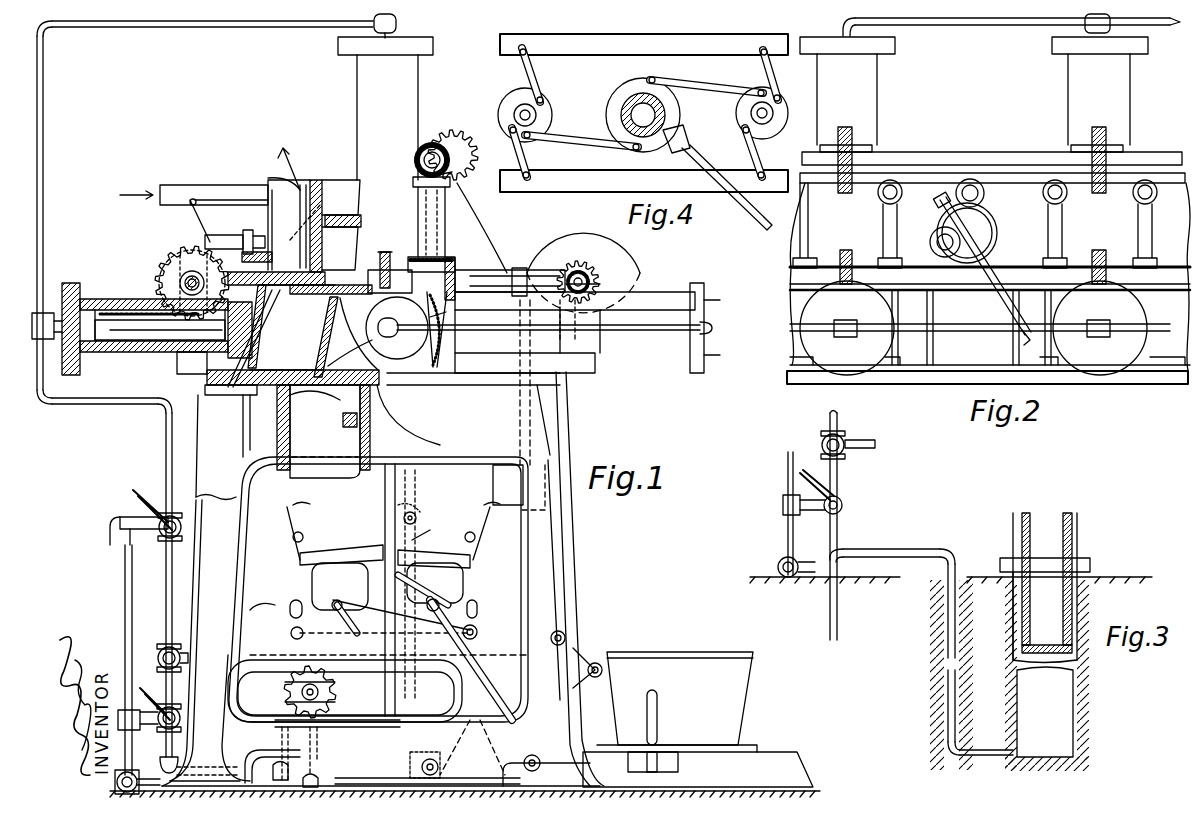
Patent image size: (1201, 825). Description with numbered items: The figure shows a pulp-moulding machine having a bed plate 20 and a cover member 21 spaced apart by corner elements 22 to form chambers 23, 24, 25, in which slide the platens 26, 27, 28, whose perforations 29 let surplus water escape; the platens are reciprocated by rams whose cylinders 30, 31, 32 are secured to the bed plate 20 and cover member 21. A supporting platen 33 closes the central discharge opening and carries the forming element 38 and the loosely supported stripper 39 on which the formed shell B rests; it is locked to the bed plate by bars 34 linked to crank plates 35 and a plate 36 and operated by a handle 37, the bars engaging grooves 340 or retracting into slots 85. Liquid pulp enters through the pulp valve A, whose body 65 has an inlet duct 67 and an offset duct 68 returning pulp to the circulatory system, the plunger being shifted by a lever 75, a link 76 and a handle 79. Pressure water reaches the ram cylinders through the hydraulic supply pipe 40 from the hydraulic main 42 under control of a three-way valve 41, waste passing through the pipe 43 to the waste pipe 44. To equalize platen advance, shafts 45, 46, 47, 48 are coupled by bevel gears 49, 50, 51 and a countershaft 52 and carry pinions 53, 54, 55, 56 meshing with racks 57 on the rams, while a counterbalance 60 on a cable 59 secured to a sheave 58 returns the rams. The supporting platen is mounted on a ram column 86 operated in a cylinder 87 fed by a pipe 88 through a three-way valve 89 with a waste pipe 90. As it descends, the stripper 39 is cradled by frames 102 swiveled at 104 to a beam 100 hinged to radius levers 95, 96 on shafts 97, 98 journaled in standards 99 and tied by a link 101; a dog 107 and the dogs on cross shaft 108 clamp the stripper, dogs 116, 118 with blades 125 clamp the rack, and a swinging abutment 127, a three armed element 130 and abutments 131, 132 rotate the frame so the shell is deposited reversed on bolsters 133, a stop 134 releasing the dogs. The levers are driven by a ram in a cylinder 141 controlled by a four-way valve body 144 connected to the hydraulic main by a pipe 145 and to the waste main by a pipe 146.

In FIG. 1, the bed plate 20 is at (232, 388).
In FIG. 2, the bed plate 20 is at (907, 383).
In FIG. 1, the cover member 21 is at (452, 232).
In FIG. 2, the cover member 21 is at (1037, 243).
In FIG. 1, the corner elements 22 is at (493, 353).
In FIG. 1, the chamber 23 is at (291, 327).
In FIG. 1, the chamber 24 is at (453, 347).
In FIG. 1, the chamber 25 is at (340, 251).
In FIG. 1, the platen 26 is at (258, 305).
In FIG. 2, the platen 26 is at (970, 350).
In FIG. 1, the platen 27 is at (446, 312).
In FIG. 1, the platen 28 is at (341, 217).
In FIG. 1, the perforations 29 is at (350, 225).
In FIG. 1, the ram cylinder 30 is at (140, 290).
In FIG. 2, the ram cylinder 30 is at (800, 348).
In FIG. 1, the ram cylinder 31 is at (458, 268).
In FIG. 1, the ram cylinder 32 is at (370, 102).
In FIG. 2, the ram cylinder 32 is at (872, 107).
In FIG. 1, the supporting platen 33 is at (323, 431).
In FIG. 4, the bars 34 is at (590, 50).
In FIG. 4, the crank plates 35 is at (550, 113).
In FIG. 4, the plate 36 is at (648, 82).
In FIG. 4, the handle 37 is at (755, 228).
In FIG. 1, the forming element 38 is at (318, 348).
In FIG. 1, the stripper 39 is at (330, 358).
In FIG. 1, the hydraulic supply pipe 40 is at (127, 27).
In FIG. 2, the hydraulic supply pipe 40 is at (947, 327).
In FIG. 3, the hydraulic supply pipe 40 is at (838, 426).
In FIG. 1, the valve 41 is at (150, 522).
In FIG. 1, the hydraulic main 42 is at (160, 648).
In FIG. 3, the hydraulic main 42 is at (849, 439).
In FIG. 1, the pipe 43 is at (124, 592).
In FIG. 1, the waste pipe 44 is at (115, 782).
In FIG. 1, the shaft 45 is at (158, 272).
In FIG. 1, the shaft 46 is at (535, 270).
In FIG. 1, the shaft 47 is at (600, 278).
In FIG. 2, the shaft 47 is at (1061, 267).
In FIG. 1, the shaft 48 is at (455, 147).
In FIG. 2, the shaft 48 is at (948, 160).
In FIG. 1, the bevel gear 49 is at (572, 310).
In FIG. 1, the bevel gear 50 is at (600, 282).
In FIG. 1, the bevel gear 51 is at (452, 172).
In FIG. 1, the countershaft 52 is at (460, 183).
In FIG. 1, the pinion 53 is at (165, 268).
In FIG. 2, the pinion 53 is at (857, 266).
In FIG. 1, the pinion 54 is at (385, 252).
In FIG. 1, the pinion 55 is at (597, 228).
In FIG. 1, the pinion 56 is at (430, 143).
In FIG. 1, the rack 57 is at (135, 320).
In FIG. 1, the sheave 58 is at (628, 332).
In FIG. 1, the cable 59 is at (553, 425).
In FIG. 1, the counterbalance 60 is at (515, 507).
In FIG. 1, the valve body 65 is at (300, 190).
In FIG. 2, the valve body 65 is at (988, 203).
In FIG. 1, the duct 67 is at (238, 190).
In FIG. 2, the duct 67 is at (987, 177).
In FIG. 1, the offset duct 68 is at (268, 258).
In FIG. 2, the offset duct 68 is at (958, 267).
In FIG. 1, the lever 75 is at (203, 222).
In FIG. 1, the link 76 is at (215, 190).
In FIG. 1, the handle 79 is at (165, 320).
In FIG. 2, the handle 79 is at (1026, 345).
In FIG. 1, the slots 85 is at (340, 378).
In FIG. 1, the ram column 86 is at (368, 490).
In FIG. 3, the ram column 86 is at (1037, 617).
In FIG. 3, the cylinder 87 is at (1025, 695).
In FIG. 1, the pipe 88 is at (262, 768).
In FIG. 3, the pipe 88 is at (950, 617).
In FIG. 1, the three-way valve 89 is at (182, 715).
In FIG. 3, the three-way valve 89 is at (843, 504).
In FIG. 1, the waste pipe 90 is at (145, 728).
In FIG. 3, the waste pipe 90 is at (795, 512).
In FIG. 1, the radius lever 95 is at (385, 640).
In FIG. 1, the radius lever 96 is at (487, 688).
In FIG. 1, the shaft 97 is at (436, 765).
In FIG. 1, the shaft 98 is at (540, 762).
In FIG. 1, the supporting standards 99 is at (557, 575).
In FIG. 1, the beam 100 is at (440, 592).
In FIG. 1, the hinged link 101 is at (470, 722).
In FIG. 1, the frame 102 is at (472, 562).
In FIG. 1, the swivel joint 104 is at (426, 588).
In FIG. 1, the dog 107 is at (288, 600).
In FIG. 1, the cross shaft 108 is at (478, 605).
In FIG. 1, the dog 116 is at (290, 525).
In FIG. 1, the dog 118 is at (480, 520).
In FIG. 1, the blade 125 is at (476, 505).
In FIG. 1, the swinging abutment 127 is at (418, 506).
In FIG. 1, the three armed element 130 is at (412, 540).
In FIG. 1, the abutment 131 is at (572, 636).
In FIG. 1, the abutment 132 is at (600, 664).
In FIG. 1, the bolsters 133 is at (698, 766).
In FIG. 1, the stop 134 is at (656, 712).
In FIG. 1, the cylinder 141 is at (285, 752).
In FIG. 1, the valve body 144 is at (290, 686).
In FIG. 1, the pipe 145 is at (252, 612).
In FIG. 1, the pipe 146 is at (328, 762).
In FIG. 1, the grooves 340 is at (343, 421).
In FIG. 1, the pulp valve A is at (286, 169).
In FIG. 2, the pulp valve A is at (993, 237).
In FIG. 1, the formed shell B is at (338, 313).